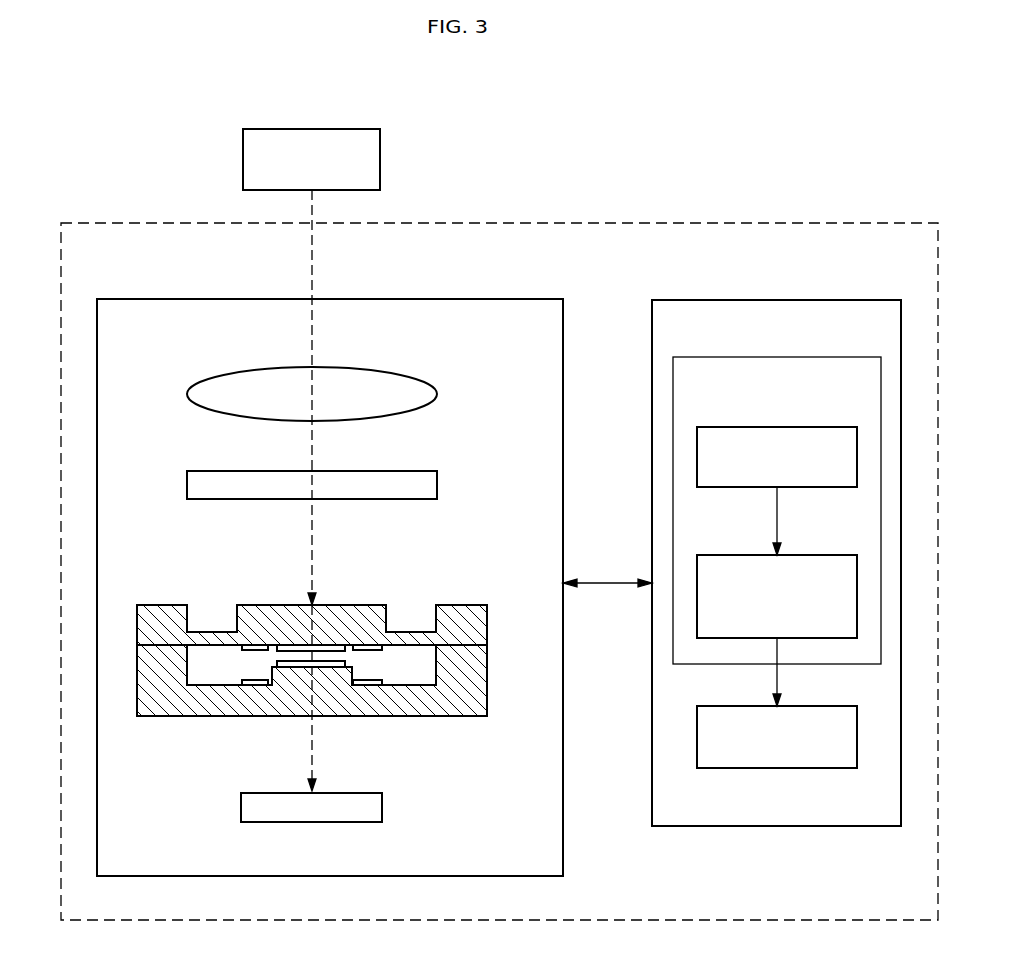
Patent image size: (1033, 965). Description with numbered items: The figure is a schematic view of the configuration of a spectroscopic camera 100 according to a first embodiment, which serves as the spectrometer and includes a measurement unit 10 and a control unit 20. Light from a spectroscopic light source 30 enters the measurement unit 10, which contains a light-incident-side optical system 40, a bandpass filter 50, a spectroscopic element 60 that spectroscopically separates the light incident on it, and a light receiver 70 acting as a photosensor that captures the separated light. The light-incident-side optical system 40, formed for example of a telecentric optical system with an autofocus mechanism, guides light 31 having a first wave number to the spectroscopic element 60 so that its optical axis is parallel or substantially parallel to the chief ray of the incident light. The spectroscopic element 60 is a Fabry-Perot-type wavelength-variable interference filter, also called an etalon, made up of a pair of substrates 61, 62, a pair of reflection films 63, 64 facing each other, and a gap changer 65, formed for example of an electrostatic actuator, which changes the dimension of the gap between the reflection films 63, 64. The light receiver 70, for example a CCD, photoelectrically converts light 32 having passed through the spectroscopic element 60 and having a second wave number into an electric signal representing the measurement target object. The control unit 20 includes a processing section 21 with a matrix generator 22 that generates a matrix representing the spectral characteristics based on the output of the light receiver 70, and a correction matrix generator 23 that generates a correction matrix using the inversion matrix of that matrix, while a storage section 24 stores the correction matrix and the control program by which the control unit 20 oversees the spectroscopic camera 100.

The spectroscopic camera 100 is at (878, 113).
The measurement unit 10 is at (455, 299).
The control unit 20 is at (778, 299).
The processing section 21 is at (839, 357).
The matrix generator 22 is at (806, 427).
The correction matrix generator 23 is at (806, 555).
The storage section 24 is at (806, 706).
The spectroscopic light source 30 is at (313, 129).
The light having a first wave number 31 is at (315, 544).
The light having a second wave number 32 is at (315, 737).
The light-incident-side optical system 40 is at (437, 390).
The bandpass filter 50 is at (437, 480).
The spectroscopic element 60 is at (342, 658).
The substrate 61 is at (487, 626).
The substrate 62 is at (487, 676).
The reflection film 63 is at (293, 669).
The reflection film 64 is at (293, 647).
The gap changer 65 is at (250, 657).
The light receiver 70 is at (382, 805).